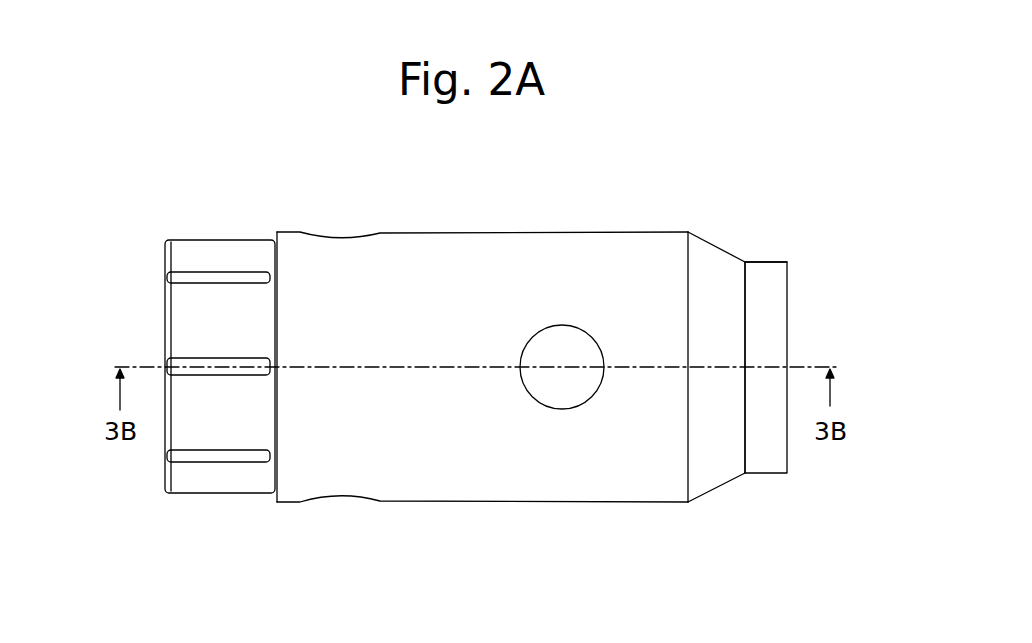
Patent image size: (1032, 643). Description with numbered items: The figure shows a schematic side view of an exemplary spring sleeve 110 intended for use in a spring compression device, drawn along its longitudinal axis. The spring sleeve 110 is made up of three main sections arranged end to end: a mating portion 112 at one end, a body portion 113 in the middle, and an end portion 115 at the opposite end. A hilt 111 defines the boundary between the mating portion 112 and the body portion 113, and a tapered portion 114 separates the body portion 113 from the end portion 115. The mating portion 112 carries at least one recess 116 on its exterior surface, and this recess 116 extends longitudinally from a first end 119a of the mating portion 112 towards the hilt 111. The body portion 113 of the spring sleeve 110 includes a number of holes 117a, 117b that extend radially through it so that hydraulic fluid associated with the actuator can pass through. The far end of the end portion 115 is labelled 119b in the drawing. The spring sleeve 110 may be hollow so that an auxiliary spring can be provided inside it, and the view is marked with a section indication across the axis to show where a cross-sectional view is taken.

The spring sleeve 110 is at (232, 180).
The hilt 111 is at (275, 258).
The mating portion 112 is at (232, 494).
The body portion 113 is at (578, 503).
The tapered portion 114 is at (722, 486).
The end portion 115 is at (778, 475).
The recess 116 is at (192, 457).
The hole 117a is at (562, 333).
The hole 117b is at (340, 238).
The first end of the mating portion 119a is at (167, 303).
The rear end edge 119b is at (845, 262).